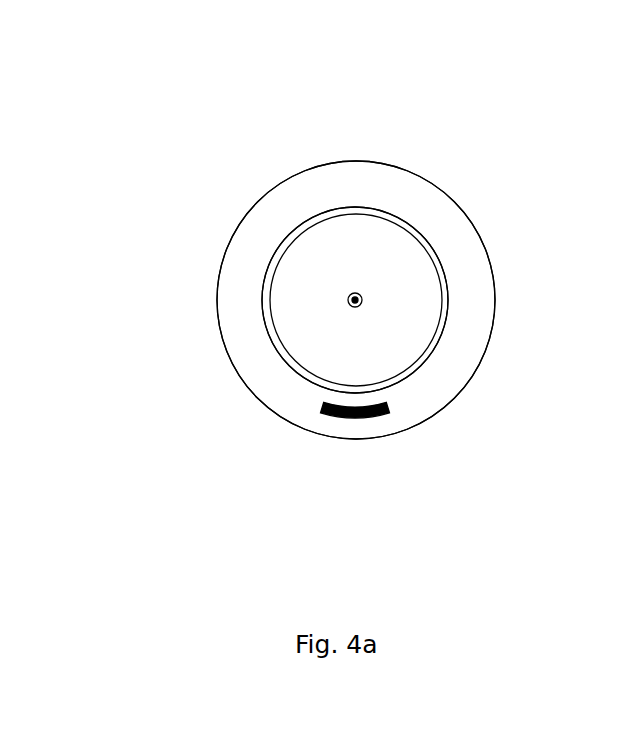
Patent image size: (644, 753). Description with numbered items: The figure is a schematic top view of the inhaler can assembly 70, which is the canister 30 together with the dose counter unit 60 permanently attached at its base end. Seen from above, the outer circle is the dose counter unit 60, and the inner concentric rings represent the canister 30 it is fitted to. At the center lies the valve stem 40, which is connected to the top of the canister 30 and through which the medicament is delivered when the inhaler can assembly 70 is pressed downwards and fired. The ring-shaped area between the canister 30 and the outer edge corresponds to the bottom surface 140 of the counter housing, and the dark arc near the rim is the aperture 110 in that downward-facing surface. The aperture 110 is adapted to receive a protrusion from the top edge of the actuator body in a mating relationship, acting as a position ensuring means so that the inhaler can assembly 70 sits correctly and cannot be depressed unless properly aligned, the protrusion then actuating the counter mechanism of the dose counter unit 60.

The inhaler can assembly 70 is at (197, 126).
The dose counter unit 60 is at (217, 298).
The bottom surface 140 is at (253, 357).
The canister 30 is at (357, 214).
The valve stem 40 is at (362, 293).
The aperture 110 is at (355, 420).